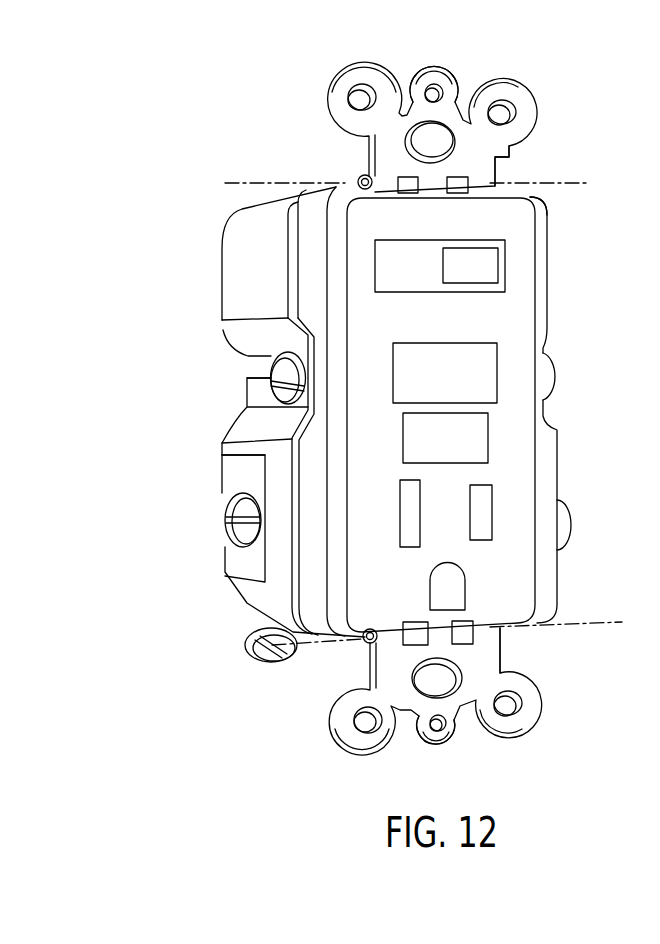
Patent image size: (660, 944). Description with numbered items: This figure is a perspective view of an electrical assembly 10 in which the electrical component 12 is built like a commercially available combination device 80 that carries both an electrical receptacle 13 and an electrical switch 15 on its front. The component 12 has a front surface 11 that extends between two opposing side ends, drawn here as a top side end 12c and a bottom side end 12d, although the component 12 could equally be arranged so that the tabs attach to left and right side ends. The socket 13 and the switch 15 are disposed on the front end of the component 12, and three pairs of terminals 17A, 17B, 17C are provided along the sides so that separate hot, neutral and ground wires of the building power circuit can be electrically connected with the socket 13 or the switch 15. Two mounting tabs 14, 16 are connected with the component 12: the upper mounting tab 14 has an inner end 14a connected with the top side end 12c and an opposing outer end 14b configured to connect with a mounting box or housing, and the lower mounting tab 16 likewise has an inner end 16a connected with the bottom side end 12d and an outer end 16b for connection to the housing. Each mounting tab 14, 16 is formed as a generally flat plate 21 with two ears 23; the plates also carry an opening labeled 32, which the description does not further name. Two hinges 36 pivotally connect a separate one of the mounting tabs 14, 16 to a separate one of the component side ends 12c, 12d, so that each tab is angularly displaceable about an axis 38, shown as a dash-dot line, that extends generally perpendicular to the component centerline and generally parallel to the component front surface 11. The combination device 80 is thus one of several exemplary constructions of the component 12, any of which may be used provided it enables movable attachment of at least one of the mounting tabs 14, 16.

The electrical assembly 10 is at (213, 102).
The front surface 11 is at (378, 402).
The electrical component 12 is at (151, 380).
The side end 12c is at (540, 196).
The side end 12d is at (393, 630).
The electrical receptacle 13 is at (513, 556).
The mounting tab 14 is at (322, 140).
The inner end 14a is at (483, 175).
The outer end 14b is at (402, 118).
The electrical switch 15 is at (526, 270).
The mounting tab 16 is at (290, 743).
The inner end 16a is at (490, 640).
The outer end 16b is at (467, 698).
The terminal 17A is at (559, 380).
The terminal 17B is at (283, 369).
The terminal 17C is at (255, 650).
The flat plate 21 is at (477, 148).
The ear 23 is at (338, 84).
The oblong mounting slot 32 is at (432, 128).
The hinge 36 is at (335, 168).
The axis 38 is at (572, 180).
The combination device 80 is at (199, 448).